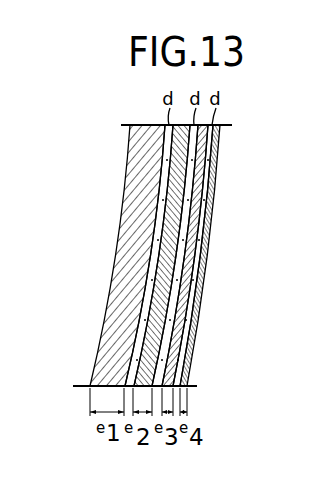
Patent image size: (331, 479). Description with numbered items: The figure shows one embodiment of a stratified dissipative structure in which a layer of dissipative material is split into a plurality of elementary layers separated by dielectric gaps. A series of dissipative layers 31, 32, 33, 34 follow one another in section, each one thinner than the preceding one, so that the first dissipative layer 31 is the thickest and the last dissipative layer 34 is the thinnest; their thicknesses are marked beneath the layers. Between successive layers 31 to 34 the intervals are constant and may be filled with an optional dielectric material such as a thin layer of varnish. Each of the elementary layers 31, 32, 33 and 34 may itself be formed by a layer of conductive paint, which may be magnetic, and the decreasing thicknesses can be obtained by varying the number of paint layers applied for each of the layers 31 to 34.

The dissipative layer 31 is at (125, 285).
The dissipative layer 32 is at (178, 189).
The dissipative layer 33 is at (201, 200).
The dissipative layer 34 is at (205, 290).